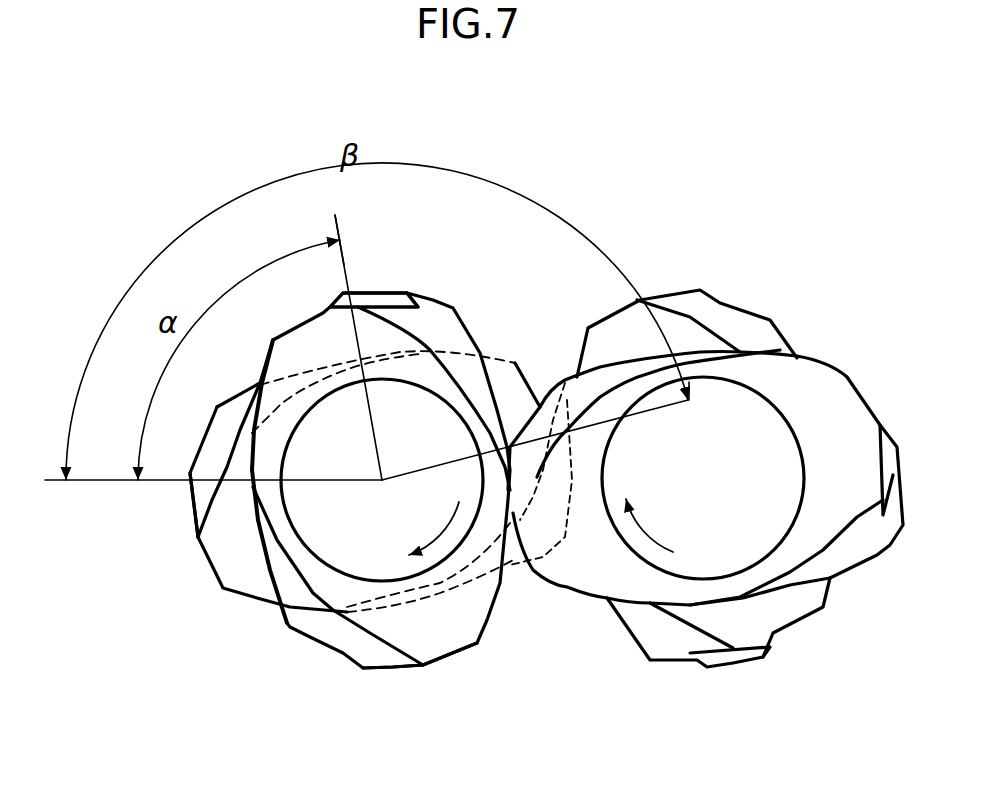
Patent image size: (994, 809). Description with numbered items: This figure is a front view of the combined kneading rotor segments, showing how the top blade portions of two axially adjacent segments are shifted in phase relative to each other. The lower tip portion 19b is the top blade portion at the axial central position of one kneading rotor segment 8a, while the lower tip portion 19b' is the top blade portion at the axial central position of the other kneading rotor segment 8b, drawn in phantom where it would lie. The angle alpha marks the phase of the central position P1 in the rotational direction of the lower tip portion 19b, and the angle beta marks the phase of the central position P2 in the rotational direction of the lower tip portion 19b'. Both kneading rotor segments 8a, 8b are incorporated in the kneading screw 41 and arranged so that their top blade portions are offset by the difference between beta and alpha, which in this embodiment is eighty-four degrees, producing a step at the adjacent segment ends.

The kneading rotor segment 8a is at (298, 620).
The kneading rotor segment 8b is at (200, 498).
The lower tip portion 19b is at (405, 251).
The lower tip portion 19b' is at (551, 427).
The kneading screw 41 is at (398, 680).
The central position P1 is at (329, 226).
The central position P2 is at (690, 401).